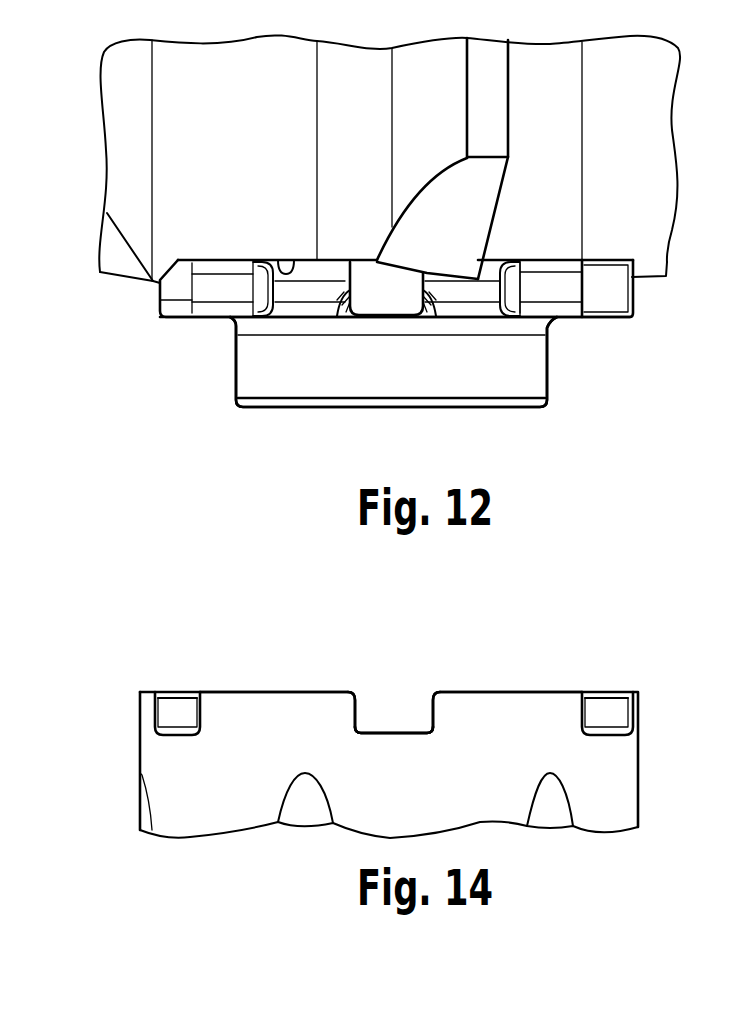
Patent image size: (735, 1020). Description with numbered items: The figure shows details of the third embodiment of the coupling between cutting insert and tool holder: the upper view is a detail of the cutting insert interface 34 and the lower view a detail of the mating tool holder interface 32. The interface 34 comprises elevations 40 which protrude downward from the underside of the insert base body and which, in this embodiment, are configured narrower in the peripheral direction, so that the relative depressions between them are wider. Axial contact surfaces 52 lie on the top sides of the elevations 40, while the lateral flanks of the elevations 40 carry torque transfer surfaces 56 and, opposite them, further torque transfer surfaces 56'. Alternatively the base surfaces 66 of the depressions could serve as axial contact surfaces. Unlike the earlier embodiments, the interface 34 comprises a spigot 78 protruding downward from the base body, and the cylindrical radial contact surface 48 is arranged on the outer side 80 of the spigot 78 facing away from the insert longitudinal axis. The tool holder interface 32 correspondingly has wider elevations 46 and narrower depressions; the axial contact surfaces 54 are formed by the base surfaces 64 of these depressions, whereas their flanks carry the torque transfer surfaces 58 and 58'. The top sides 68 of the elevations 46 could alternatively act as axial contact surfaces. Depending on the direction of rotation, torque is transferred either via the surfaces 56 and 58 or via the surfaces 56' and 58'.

In FIG. 14, the interface 32 is at (128, 642).
In FIG. 12, the interface 34 is at (188, 362).
In FIG. 12, the elevations 40 is at (178, 300).
In FIG. 14, the elevations 46 is at (270, 722).
In FIG. 12, the radial contact surface 48 is at (548, 377).
In FIG. 12, the axial contact surfaces 52 is at (388, 318).
In FIG. 14, the axial contact surfaces 54 is at (398, 717).
In FIG. 12, the torque transfer surfaces 56 is at (335, 337).
In FIG. 12, the further torque transfer surface 56' is at (440, 337).
In FIG. 14, the torque transfer surfaces 58 is at (344, 669).
In FIG. 14, the further torque transfer surface 58' is at (443, 669).
In FIG. 14, the base surfaces 64 is at (394, 730).
In FIG. 12, the base surfaces 66 is at (290, 258).
In FIG. 14, the top side 68 is at (234, 677).
In FIG. 12, the spigot 78 is at (264, 388).
In FIG. 12, the outer side 80 is at (393, 362).